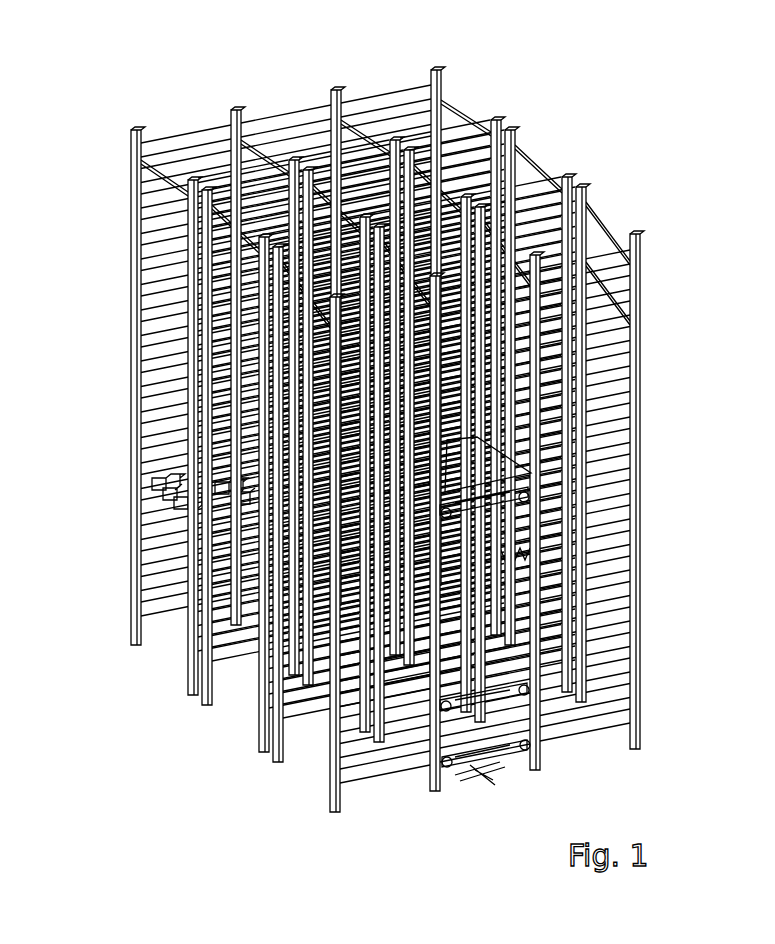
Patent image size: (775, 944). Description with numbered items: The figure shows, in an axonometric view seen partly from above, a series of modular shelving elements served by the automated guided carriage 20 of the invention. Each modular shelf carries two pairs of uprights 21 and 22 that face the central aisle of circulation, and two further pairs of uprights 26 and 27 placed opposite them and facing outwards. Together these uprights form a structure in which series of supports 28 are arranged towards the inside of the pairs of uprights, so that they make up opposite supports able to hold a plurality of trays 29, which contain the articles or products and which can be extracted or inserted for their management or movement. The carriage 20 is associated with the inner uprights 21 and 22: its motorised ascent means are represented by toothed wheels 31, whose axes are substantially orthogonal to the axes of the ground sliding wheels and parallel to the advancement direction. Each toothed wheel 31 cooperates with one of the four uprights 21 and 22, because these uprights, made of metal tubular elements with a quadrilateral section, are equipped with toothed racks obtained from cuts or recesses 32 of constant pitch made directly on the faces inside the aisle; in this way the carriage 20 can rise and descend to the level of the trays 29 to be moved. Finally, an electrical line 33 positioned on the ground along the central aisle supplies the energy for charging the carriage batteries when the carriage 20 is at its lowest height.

The automated guided carriage 20 is at (407, 467).
The upright 21 is at (293, 157).
The upright 22 is at (398, 150).
The upright 26 is at (128, 146).
The upright 27 is at (497, 127).
The support 28 is at (610, 443).
The tray 29 is at (602, 282).
The toothed wheel 31 is at (520, 540).
The recess 32 is at (365, 205).
The electrical line 33 is at (455, 780).